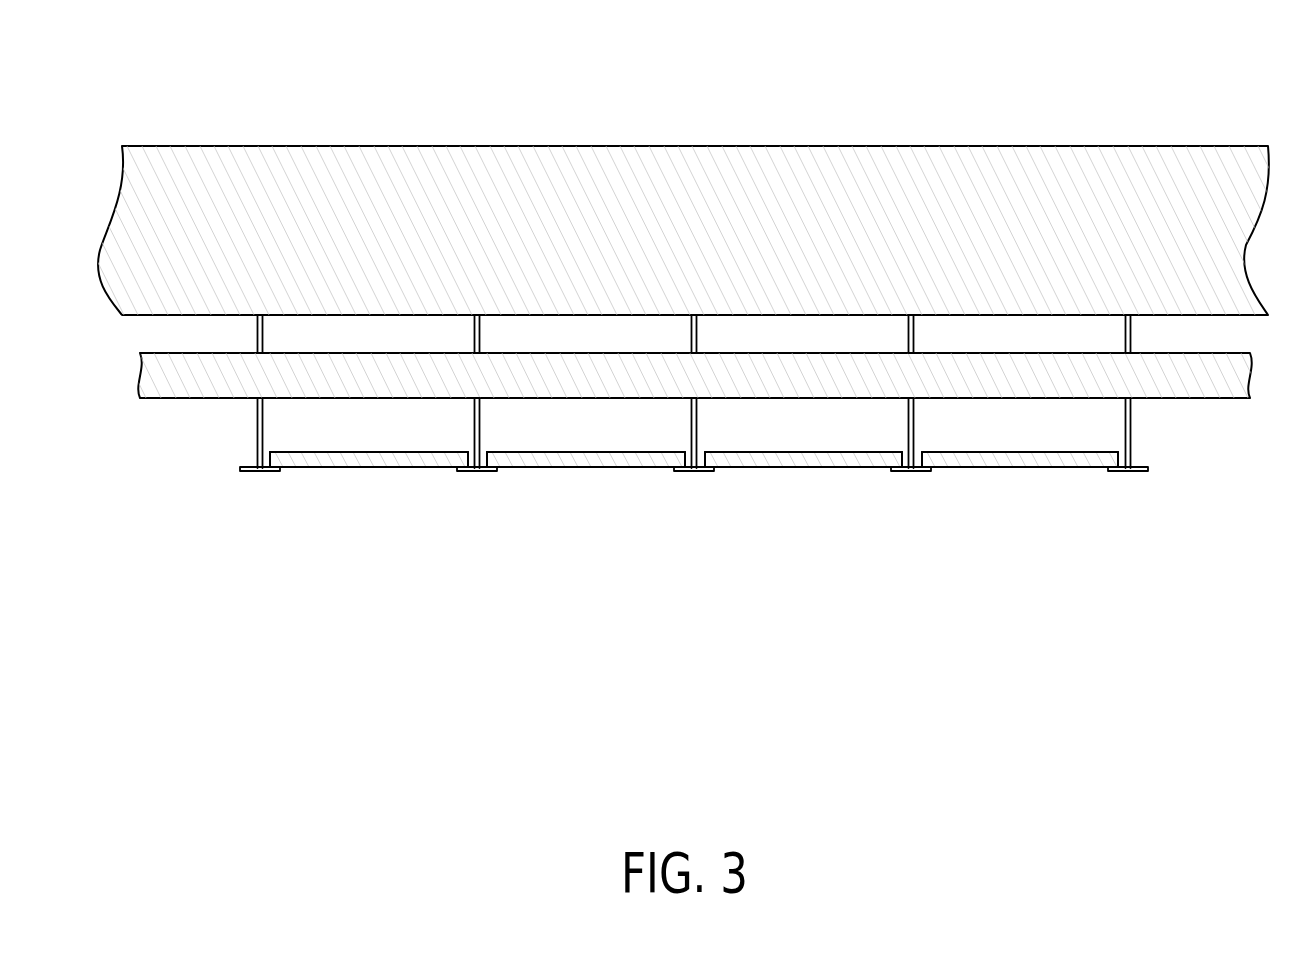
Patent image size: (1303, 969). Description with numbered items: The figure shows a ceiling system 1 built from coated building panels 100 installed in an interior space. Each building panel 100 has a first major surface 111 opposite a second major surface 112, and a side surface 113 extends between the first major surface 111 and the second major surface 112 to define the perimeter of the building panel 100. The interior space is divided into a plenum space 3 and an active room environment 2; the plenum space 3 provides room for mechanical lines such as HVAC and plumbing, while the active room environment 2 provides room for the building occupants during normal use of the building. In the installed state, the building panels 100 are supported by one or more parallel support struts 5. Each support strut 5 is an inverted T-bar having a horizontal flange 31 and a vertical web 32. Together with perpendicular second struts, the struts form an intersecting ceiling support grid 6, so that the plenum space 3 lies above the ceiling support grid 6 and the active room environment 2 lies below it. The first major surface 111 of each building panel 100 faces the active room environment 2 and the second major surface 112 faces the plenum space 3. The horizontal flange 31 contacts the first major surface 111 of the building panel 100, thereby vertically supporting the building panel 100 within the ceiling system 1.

The ceiling system 1 is at (98, 124).
The active room environment 2 is at (668, 516).
The plenum space 3 is at (102, 350).
The support strut 5 is at (257, 414).
The ceiling support grid 6 is at (668, 508).
The horizontal flange 31 is at (260, 472).
The vertical web 32 is at (257, 446).
The coated building panel 100 is at (395, 468).
The first major surface 111 is at (447, 470).
The second major surface 112 is at (367, 454).
The side surface 113 is at (486, 457).